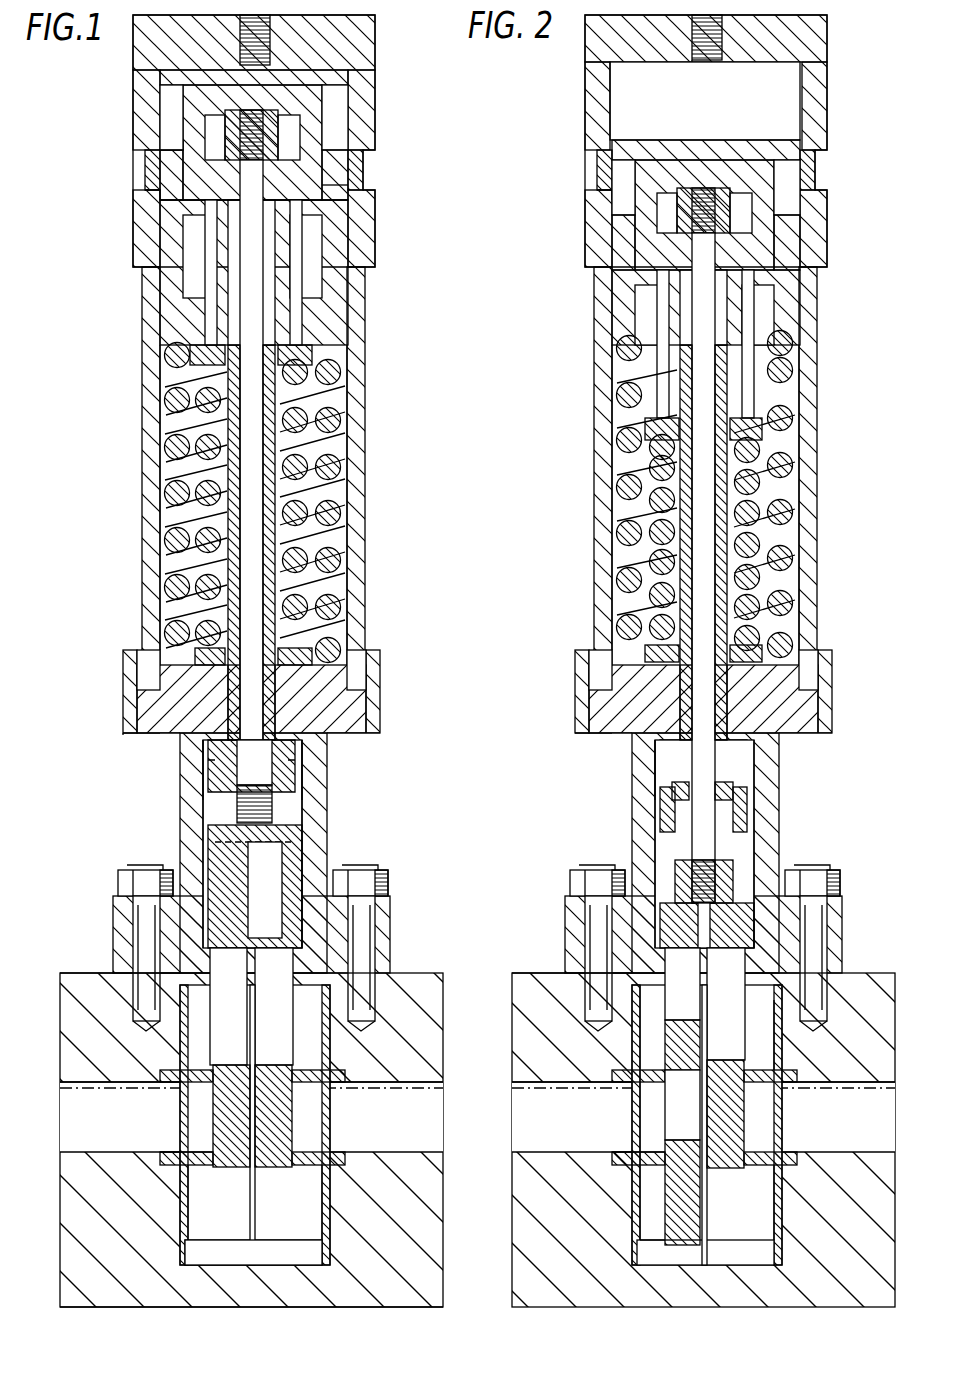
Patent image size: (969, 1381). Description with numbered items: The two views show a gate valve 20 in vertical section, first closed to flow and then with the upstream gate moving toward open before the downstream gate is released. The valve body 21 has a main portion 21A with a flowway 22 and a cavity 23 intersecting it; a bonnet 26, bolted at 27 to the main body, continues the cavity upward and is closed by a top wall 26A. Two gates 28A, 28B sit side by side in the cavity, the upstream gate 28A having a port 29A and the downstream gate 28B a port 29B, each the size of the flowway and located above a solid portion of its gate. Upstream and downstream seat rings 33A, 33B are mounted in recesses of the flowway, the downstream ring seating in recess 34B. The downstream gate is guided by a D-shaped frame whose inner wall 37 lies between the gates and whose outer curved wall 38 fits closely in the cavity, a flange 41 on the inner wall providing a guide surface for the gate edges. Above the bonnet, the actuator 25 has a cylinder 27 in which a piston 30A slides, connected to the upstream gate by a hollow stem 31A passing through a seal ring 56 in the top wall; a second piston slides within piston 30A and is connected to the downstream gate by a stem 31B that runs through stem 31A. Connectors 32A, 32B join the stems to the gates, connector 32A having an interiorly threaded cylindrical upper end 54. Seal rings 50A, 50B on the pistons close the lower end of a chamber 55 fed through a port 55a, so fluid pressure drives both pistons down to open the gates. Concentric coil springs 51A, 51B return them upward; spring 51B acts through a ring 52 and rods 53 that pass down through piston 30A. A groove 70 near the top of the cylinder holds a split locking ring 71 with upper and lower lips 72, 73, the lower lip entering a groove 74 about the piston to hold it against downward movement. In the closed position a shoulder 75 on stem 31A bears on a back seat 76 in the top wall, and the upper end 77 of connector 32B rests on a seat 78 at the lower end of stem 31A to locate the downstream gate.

In FIG. 1, the valve 20 is at (375, 431).
In FIG. 2, the valve 20 is at (736, 466).
In FIG. 1, the valve body 21 is at (430, 973).
In FIG. 2, the valve body 21 is at (703, 1116).
In FIG. 1, the main portion 21A is at (435, 1235).
In FIG. 1, the flowway 22 is at (115, 975).
In FIG. 2, the flowway 22 is at (572, 950).
In FIG. 1, the cavity 23 is at (430, 1090).
In FIG. 2, the cavity 23 is at (703, 1117).
In FIG. 1, the actuator 25 is at (377, 581).
In FIG. 2, the actuator 25 is at (745, 497).
In FIG. 1, the bonnet 26 is at (330, 800).
In FIG. 2, the bonnet 26 is at (704, 853).
In FIG. 1, the top wall 26A is at (140, 740).
In FIG. 1, the cylinder 27 is at (366, 335).
In FIG. 2, the cylinder 27 is at (731, 632).
In FIG. 1, the upstream gate 28A is at (300, 1150).
In FIG. 2, the upstream gate 28A is at (770, 1114).
In FIG. 1, the downstream gate 28B is at (225, 1108).
In FIG. 2, the downstream gate 28B is at (578, 1192).
In FIG. 1, the spool stem 29A is at (272, 1003).
In FIG. 2, the spool stem 29A is at (722, 1106).
In FIG. 1, the port 29B is at (233, 1003).
In FIG. 2, the port 29B is at (680, 1044).
In FIG. 1, the piston 30A is at (345, 248).
In FIG. 2, the piston 30A is at (735, 180).
In FIG. 1, the stem 31A is at (290, 722).
In FIG. 2, the stem 31A is at (785, 702).
In FIG. 1, the stem 31B is at (215, 782).
In FIG. 2, the stem 31B is at (649, 844).
In FIG. 1, the connector 32A is at (300, 848).
In FIG. 2, the connector 32A is at (777, 879).
In FIG. 1, the connector 32B is at (212, 862).
In FIG. 2, the connector 32B is at (628, 913).
In FIG. 1, the upstream seat ring 33A is at (295, 1170).
In FIG. 2, the upstream seat ring 33A is at (745, 1202).
In FIG. 1, the downstream seat ring 33B is at (205, 1170).
In FIG. 2, the downstream seat ring 33B is at (576, 1112).
In FIG. 1, the recess 34B is at (165, 1150).
In FIG. 2, the recess 34B is at (604, 1134).
In FIG. 1, the inner wall 37 is at (260, 1230).
In FIG. 2, the outer curved wall 38 is at (607, 1225).
In FIG. 2, the flange 41 is at (782, 1035).
In FIG. 1, the seal ring 50A is at (160, 225).
In FIG. 1, the seal ring 50B is at (345, 225).
In FIG. 2, the seal ring 50B is at (748, 205).
In FIG. 1, the coil spring 51A is at (300, 515).
In FIG. 2, the coil spring 51A is at (804, 494).
In FIG. 1, the coil spring 51B is at (180, 460).
In FIG. 2, the coil spring 51B is at (602, 488).
In FIG. 1, the ring 52 is at (200, 355).
In FIG. 2, the ring 52 is at (653, 538).
In FIG. 1, the rods 53 is at (205, 290).
In FIG. 2, the rods 53 is at (647, 344).
In FIG. 1, the cylindrical upper end 54 is at (355, 42).
In FIG. 2, the cylindrical upper end 54 is at (736, 38).
In FIG. 1, the chamber 55 is at (300, 770).
In FIG. 2, the chamber 55 is at (726, 427).
In FIG. 2, the port 55a is at (678, 82).
In FIG. 1, the seal ring 56 is at (175, 688).
In FIG. 2, the seal ring 56 is at (677, 696).
In FIG. 1, the groove 70 is at (360, 170).
In FIG. 2, the groove 70 is at (837, 167).
In FIG. 1, the split locking ring 71 is at (148, 168).
In FIG. 2, the split locking ring 71 is at (574, 168).
In FIG. 1, the lip 72 is at (165, 145).
In FIG. 1, the lip 73 is at (160, 200).
In FIG. 2, the lip 73 is at (573, 207).
In FIG. 1, the groove 74 is at (352, 185).
In FIG. 2, the shoulder 75 is at (612, 770).
In FIG. 1, the back seat 76 is at (210, 753).
In FIG. 1, the upper end 77 is at (300, 792).
In FIG. 2, the upper end 77 is at (775, 871).
In FIG. 1, the seat 78 is at (232, 810).
In FIG. 2, the seat 78 is at (657, 809).